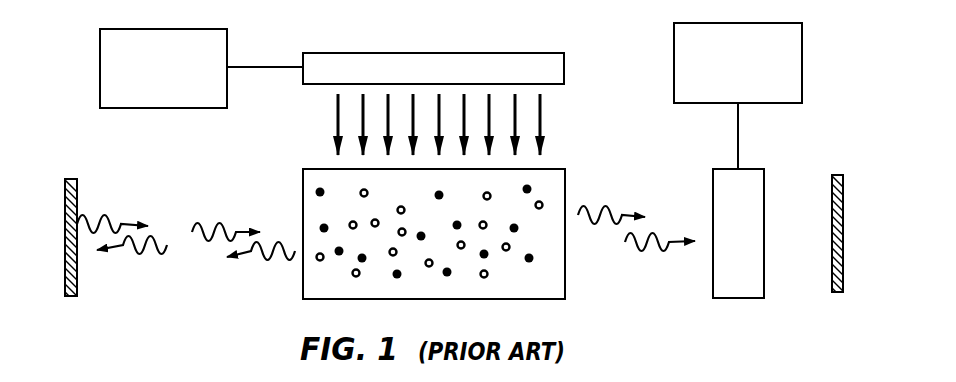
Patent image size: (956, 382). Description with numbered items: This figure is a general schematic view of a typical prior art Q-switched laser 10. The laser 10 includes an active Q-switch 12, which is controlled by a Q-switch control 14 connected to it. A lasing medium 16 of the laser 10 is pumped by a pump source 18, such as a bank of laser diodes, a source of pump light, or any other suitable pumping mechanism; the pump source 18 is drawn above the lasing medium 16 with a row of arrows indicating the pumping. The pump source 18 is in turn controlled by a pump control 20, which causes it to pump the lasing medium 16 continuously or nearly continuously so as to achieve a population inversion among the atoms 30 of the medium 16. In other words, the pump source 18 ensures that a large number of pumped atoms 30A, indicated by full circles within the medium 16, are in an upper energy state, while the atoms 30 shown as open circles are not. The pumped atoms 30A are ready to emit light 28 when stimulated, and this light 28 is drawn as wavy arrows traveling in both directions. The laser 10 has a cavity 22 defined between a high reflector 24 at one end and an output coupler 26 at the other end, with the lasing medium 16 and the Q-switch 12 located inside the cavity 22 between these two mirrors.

The Q-switched laser 10 is at (337, 27).
The active Q-switch 12 is at (730, 170).
The Q-switch control 14 is at (674, 42).
The lasing medium 16 is at (565, 273).
The pump source 18 is at (564, 84).
The pump control 20 is at (195, 110).
The cavity 22 is at (228, 297).
The high reflector 24 is at (77, 182).
The output coupler 26 is at (838, 175).
The light 28 is at (230, 224).
The atoms 30 is at (318, 268).
The pumped atoms 30A is at (318, 190).